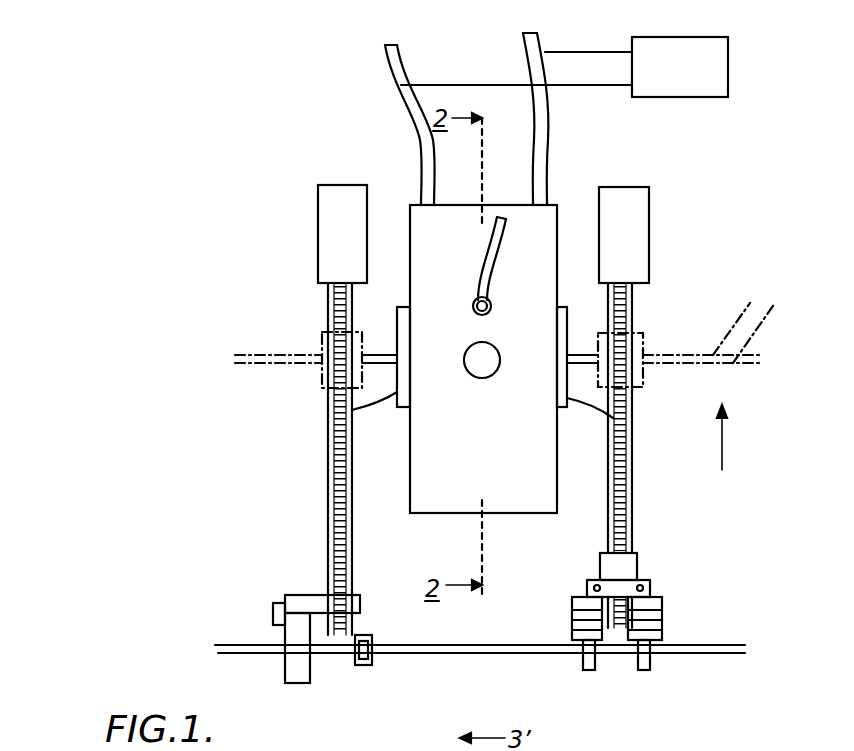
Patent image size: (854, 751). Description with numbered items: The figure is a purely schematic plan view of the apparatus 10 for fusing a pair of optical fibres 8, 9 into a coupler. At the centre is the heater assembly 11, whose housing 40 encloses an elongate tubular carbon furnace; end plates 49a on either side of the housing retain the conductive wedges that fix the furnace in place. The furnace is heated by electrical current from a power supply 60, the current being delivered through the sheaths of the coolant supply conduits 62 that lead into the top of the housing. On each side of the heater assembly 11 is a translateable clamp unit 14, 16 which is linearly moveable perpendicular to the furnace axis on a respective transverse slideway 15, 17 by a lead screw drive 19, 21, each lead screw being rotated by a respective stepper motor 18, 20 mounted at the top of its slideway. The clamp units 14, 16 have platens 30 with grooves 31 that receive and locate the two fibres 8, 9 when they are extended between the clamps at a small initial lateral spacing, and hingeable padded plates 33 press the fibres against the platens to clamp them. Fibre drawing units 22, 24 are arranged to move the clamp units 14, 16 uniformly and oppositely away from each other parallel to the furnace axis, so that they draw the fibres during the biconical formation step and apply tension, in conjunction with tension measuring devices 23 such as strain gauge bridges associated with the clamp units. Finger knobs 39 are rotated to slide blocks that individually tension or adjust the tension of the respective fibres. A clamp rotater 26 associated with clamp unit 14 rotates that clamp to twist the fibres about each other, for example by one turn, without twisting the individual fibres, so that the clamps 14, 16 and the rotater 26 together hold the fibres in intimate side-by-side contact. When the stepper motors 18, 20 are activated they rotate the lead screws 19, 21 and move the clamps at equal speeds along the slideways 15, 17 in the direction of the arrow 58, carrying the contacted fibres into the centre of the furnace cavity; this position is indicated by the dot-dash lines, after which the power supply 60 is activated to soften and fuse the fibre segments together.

The apparatus 10 is at (295, 279).
The heater assembly 11 is at (518, 489).
The clamp unit 14 is at (322, 336).
The transverse slideway 15 is at (329, 462).
The clamp unit 16 is at (645, 338).
The transverse slideway 17 is at (632, 501).
The stepper motor 18 is at (344, 196).
The lead screw drive 19 is at (333, 510).
The stepper motor 20 is at (625, 208).
The lead screw drive 21 is at (632, 541).
The fibre drawing unit 22 is at (273, 612).
The tension measuring device 23 is at (590, 617).
The fibre drawing unit 24 is at (637, 557).
The clamp rotater 26 is at (290, 668).
The platen 30 is at (597, 668).
The groove 31 is at (553, 652).
The hingeable padded plate 33 is at (652, 650).
The finger knob 39 is at (597, 584).
The housing 40 is at (492, 437).
The end plate 49a is at (331, 418).
The arrow 58 is at (722, 445).
The power supply 60 is at (690, 78).
The coolant supply conduit 62 is at (543, 50).
The optical fibre 8 is at (495, 645).
The optical fibre 9 is at (452, 656).